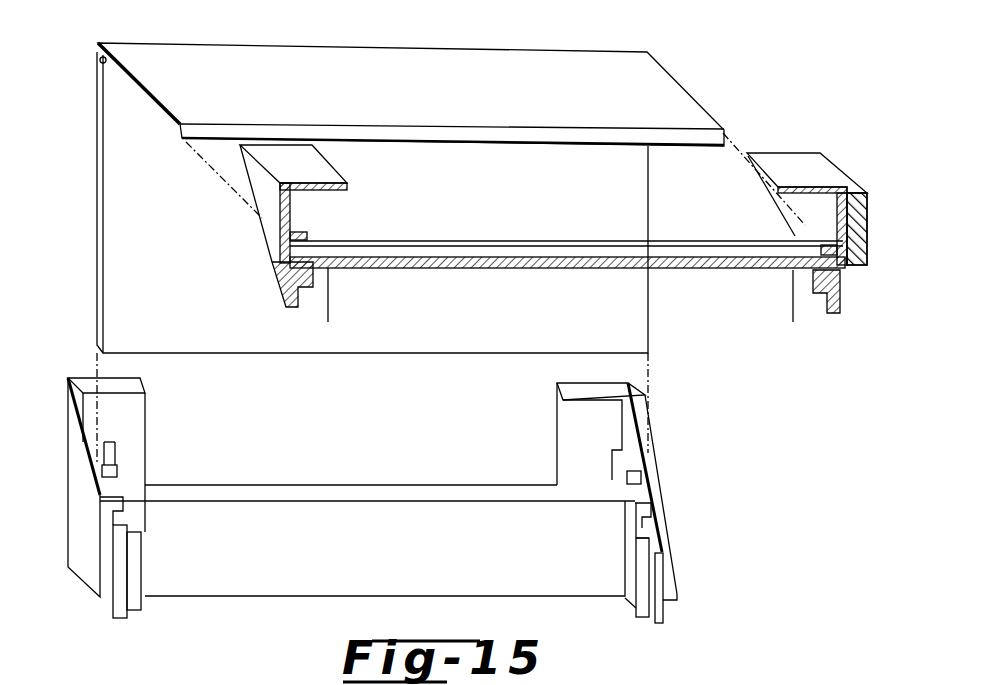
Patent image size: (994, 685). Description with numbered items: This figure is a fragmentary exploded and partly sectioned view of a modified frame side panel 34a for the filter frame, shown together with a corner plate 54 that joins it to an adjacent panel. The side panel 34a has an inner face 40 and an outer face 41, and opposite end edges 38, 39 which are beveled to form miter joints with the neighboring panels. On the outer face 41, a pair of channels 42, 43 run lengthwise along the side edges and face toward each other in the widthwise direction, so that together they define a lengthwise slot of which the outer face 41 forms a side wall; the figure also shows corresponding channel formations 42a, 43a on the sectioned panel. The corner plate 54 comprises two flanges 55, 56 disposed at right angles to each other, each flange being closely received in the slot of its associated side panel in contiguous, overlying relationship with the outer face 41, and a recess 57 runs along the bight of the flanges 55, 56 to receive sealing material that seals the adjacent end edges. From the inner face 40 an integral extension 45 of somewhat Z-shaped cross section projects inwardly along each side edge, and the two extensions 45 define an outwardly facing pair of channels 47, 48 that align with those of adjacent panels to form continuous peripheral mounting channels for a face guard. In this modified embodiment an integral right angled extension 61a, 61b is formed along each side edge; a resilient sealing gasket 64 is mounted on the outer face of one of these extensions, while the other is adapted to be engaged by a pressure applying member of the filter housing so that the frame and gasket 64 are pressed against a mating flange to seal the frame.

The corner plate 54 is at (424, 189).
The flange 55 is at (382, 92).
The flange 56 is at (167, 247).
The recess 57 is at (100, 63).
The right angled extension 61b is at (272, 212).
The right angled extension 61a is at (800, 178).
The resilient sealing gasket 64 is at (868, 215).
The left clip 42a is at (306, 243).
The right clip 43a is at (812, 252).
The end edge 39 is at (500, 243).
The outer face 41 is at (555, 246).
The side panel 34a is at (600, 270).
The inner face 40 is at (368, 528).
The end edge 38 is at (432, 485).
The channel 42 is at (100, 471).
The channel 43 is at (641, 480).
The channel 47 is at (100, 510).
The channel 48 is at (650, 518).
The extension 45 is at (113, 600).